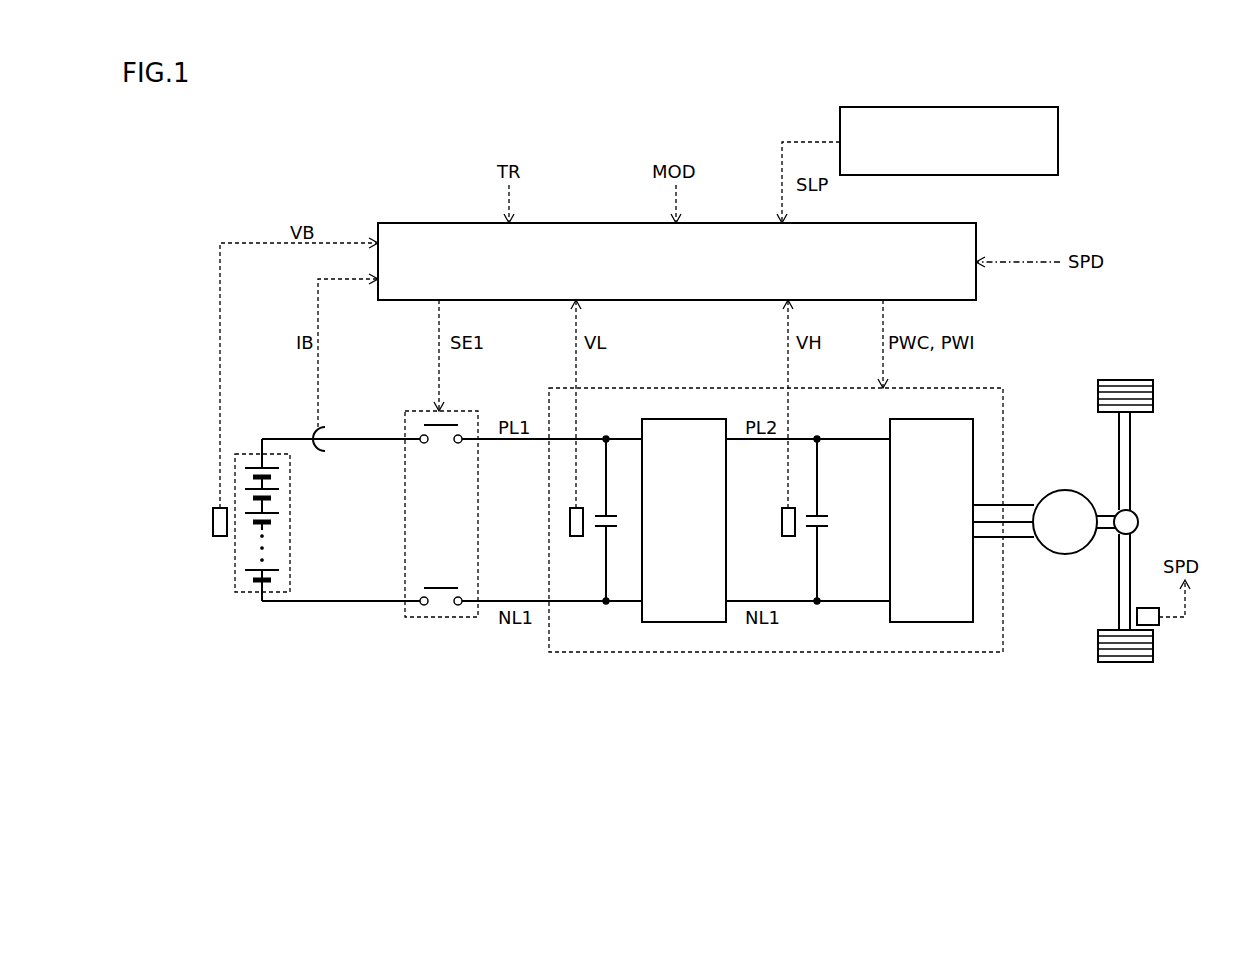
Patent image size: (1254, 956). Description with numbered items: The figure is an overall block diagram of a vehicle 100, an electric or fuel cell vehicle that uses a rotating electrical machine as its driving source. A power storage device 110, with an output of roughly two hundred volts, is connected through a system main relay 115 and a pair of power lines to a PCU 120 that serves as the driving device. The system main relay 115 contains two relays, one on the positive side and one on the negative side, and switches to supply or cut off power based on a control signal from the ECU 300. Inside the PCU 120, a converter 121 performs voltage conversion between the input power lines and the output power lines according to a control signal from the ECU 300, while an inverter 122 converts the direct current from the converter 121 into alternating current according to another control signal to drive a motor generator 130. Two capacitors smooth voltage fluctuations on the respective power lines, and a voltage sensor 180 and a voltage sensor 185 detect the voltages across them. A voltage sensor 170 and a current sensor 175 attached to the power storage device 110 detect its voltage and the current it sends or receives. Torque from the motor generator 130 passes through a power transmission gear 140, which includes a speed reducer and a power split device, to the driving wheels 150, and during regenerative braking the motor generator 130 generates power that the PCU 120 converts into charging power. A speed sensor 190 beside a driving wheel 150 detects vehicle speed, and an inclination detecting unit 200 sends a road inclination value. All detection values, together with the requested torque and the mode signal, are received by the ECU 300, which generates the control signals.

The vehicle 100 is at (1206, 170).
The power storage device 110 is at (248, 454).
The system main relay 115 is at (460, 411).
The power control unit 120 is at (972, 388).
The converter 121 is at (680, 419).
The inverter 122 is at (935, 419).
The motor generator 130 is at (1065, 490).
The power transmission gear 140 is at (1140, 520).
The driving wheels 150 is at (1138, 380).
The voltage sensor 170 is at (213, 522).
The current sensor 175 is at (325, 451).
The voltage sensor 180 is at (576, 536).
The voltage sensor 185 is at (788, 536).
The speed sensor 190 is at (1158, 625).
The inclination detecting unit 200 is at (1008, 107).
The ECU 300 is at (899, 223).